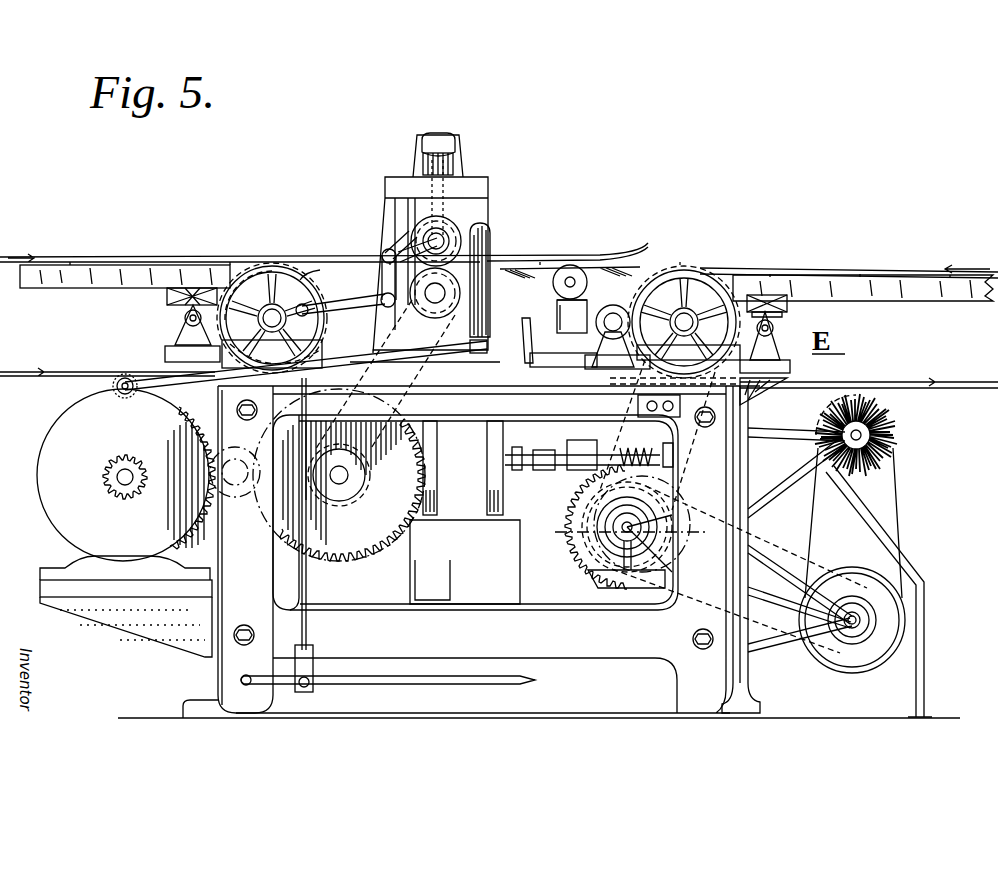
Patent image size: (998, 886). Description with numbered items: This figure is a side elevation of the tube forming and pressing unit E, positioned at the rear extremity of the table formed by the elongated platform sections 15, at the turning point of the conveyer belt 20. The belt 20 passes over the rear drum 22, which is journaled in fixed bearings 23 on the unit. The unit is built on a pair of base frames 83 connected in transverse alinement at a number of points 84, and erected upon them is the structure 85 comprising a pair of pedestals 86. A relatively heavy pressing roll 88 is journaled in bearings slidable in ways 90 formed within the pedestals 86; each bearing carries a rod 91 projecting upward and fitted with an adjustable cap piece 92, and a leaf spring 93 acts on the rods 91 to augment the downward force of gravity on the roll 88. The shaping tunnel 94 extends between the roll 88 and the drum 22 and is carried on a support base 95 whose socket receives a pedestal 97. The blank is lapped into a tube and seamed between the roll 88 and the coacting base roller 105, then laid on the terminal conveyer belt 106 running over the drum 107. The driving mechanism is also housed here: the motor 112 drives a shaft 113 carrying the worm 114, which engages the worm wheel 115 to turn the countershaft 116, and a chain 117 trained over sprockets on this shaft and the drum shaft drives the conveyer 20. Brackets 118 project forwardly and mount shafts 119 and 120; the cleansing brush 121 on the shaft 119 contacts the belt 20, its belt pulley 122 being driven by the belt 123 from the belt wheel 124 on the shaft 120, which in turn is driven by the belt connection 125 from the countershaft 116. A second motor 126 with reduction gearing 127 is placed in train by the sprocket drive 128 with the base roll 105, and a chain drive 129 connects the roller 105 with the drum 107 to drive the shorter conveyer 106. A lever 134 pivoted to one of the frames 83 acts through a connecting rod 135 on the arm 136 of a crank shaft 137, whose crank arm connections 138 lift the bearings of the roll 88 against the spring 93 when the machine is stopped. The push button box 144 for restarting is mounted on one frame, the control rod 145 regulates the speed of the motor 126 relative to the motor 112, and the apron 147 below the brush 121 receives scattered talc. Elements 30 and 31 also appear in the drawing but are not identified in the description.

The platform sections 15 is at (872, 300).
The conveyer belt 20 is at (822, 270).
The rear drum 22 is at (715, 283).
The fixed bearings 23 is at (684, 306).
The table 30 is at (890, 275).
The bracket 31 is at (624, 304).
The base frames 83 is at (471, 552).
The connection points 84 is at (258, 404).
The structure 85 is at (488, 216).
The pedestals 86 is at (484, 252).
The pressing roll 88 is at (405, 217).
The ways 90 is at (462, 214).
The bearing rod 91 is at (445, 197).
The adjustable cap piece 92 is at (420, 160).
The leaf spring 93 is at (440, 142).
The shaping tunnel 94 is at (555, 262).
The support base 95 is at (523, 330).
The pedestal 97 is at (556, 282).
The base roller 105 is at (456, 281).
The terminal conveyer belt 106 is at (172, 256).
The terminal conveyer drum 107 is at (274, 266).
The motor 112 is at (503, 512).
The motor shaft 113 is at (562, 468).
The worm 114 is at (638, 446).
The worm wheel 115 is at (572, 516).
The countershaft 116 is at (600, 526).
The chain 117 is at (694, 272).
The brackets 118 is at (770, 500).
The brush shaft 119 is at (870, 434).
The belt wheel shaft 120 is at (872, 617).
The cleansing brush 121 is at (895, 442).
The belt pulley 122 is at (890, 410).
The brush belt 123 is at (898, 500).
The belt wheel 124 is at (838, 652).
The belt connection 125 is at (790, 568).
The second motor 126 is at (124, 523).
The reduction gearing 127 is at (125, 500).
The sprocket drive 128 is at (360, 381).
The chain drive 129 is at (304, 275).
The lever 134 is at (440, 686).
The connecting rod 135 is at (307, 586).
The crank shaft arm 136 is at (342, 300).
The crank shaft 137 is at (382, 262).
The crank arm connections 138 is at (386, 252).
The push button box 144 is at (672, 396).
The control rod 145 is at (162, 380).
The apron 147 is at (900, 556).